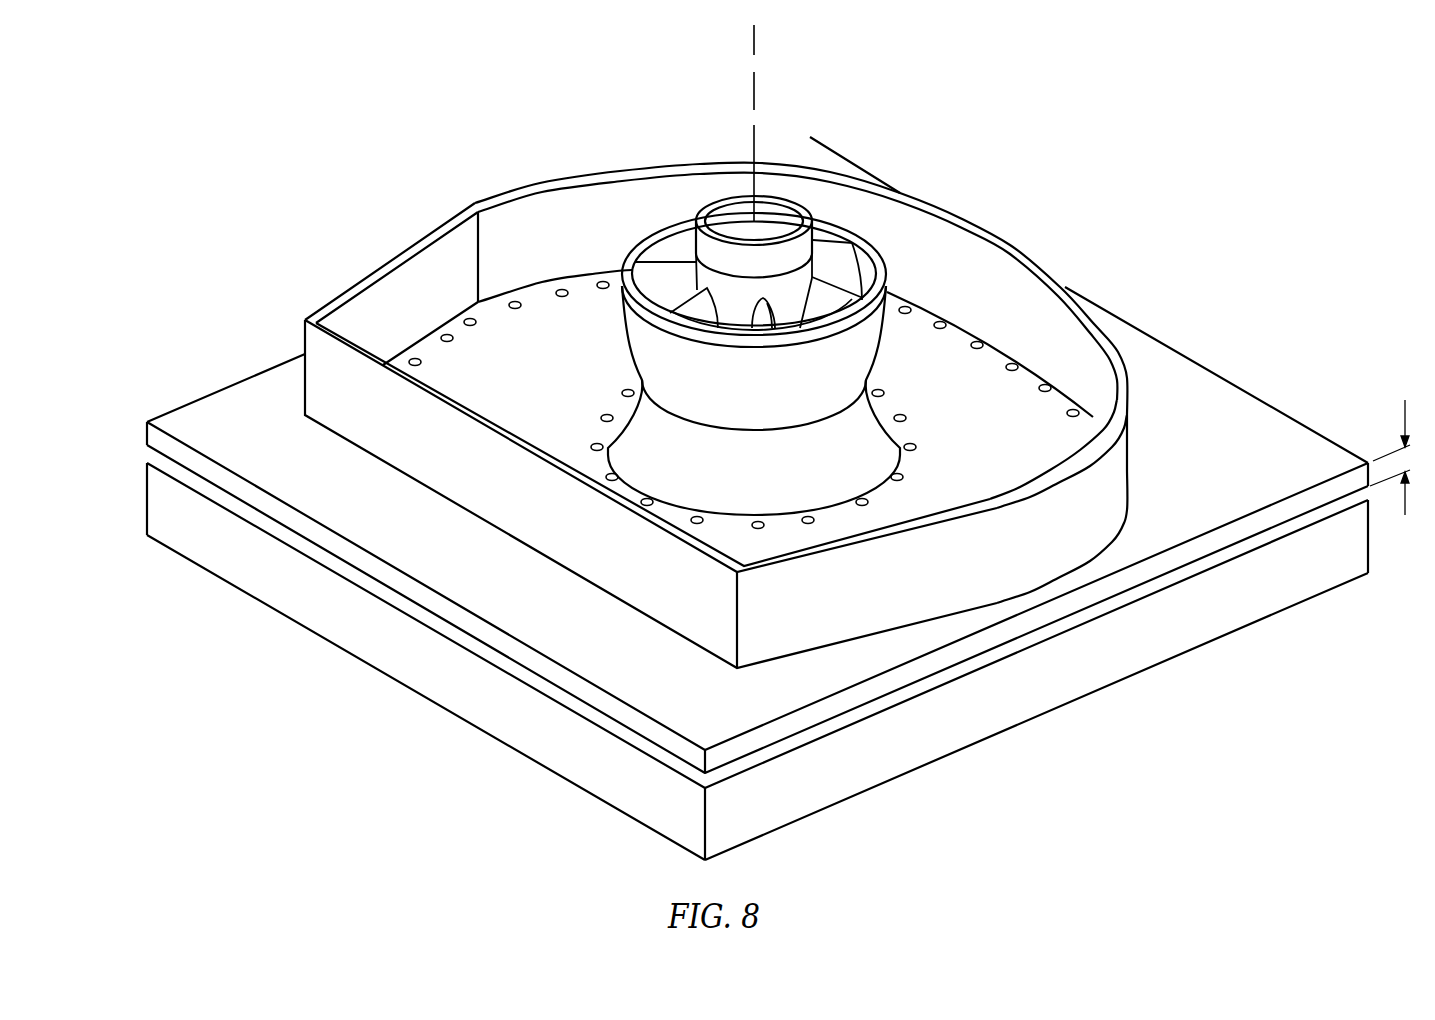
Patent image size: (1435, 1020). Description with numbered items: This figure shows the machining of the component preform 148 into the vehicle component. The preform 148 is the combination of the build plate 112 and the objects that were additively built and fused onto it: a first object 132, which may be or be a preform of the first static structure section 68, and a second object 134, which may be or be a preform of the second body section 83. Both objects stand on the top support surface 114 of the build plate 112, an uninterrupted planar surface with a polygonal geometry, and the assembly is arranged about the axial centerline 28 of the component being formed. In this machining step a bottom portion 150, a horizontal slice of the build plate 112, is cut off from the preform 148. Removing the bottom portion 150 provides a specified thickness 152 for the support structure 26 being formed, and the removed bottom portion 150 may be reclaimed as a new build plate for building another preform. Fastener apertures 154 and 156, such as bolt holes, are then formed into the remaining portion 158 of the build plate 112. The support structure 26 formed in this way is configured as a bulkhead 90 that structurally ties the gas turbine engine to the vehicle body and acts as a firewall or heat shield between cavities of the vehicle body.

The axial centerline 28 is at (765, 46).
The second body section 83 is at (716, 373).
The second object 134 is at (492, 198).
The first static structure section 68 is at (736, 314).
The first object 132 is at (655, 218).
The engine support structure 26 is at (477, 281).
The bulkhead 90 is at (440, 357).
The component preform 148 is at (716, 342).
The thickness 152 is at (1405, 400).
The top support surface 114 is at (216, 420).
The build plate 112 is at (741, 498).
The bottom portion 150 is at (232, 548).
The remaining portion 158 is at (346, 552).
The fastener aperture 154 is at (901, 477).
The fastener aperture 156 is at (1009, 367).